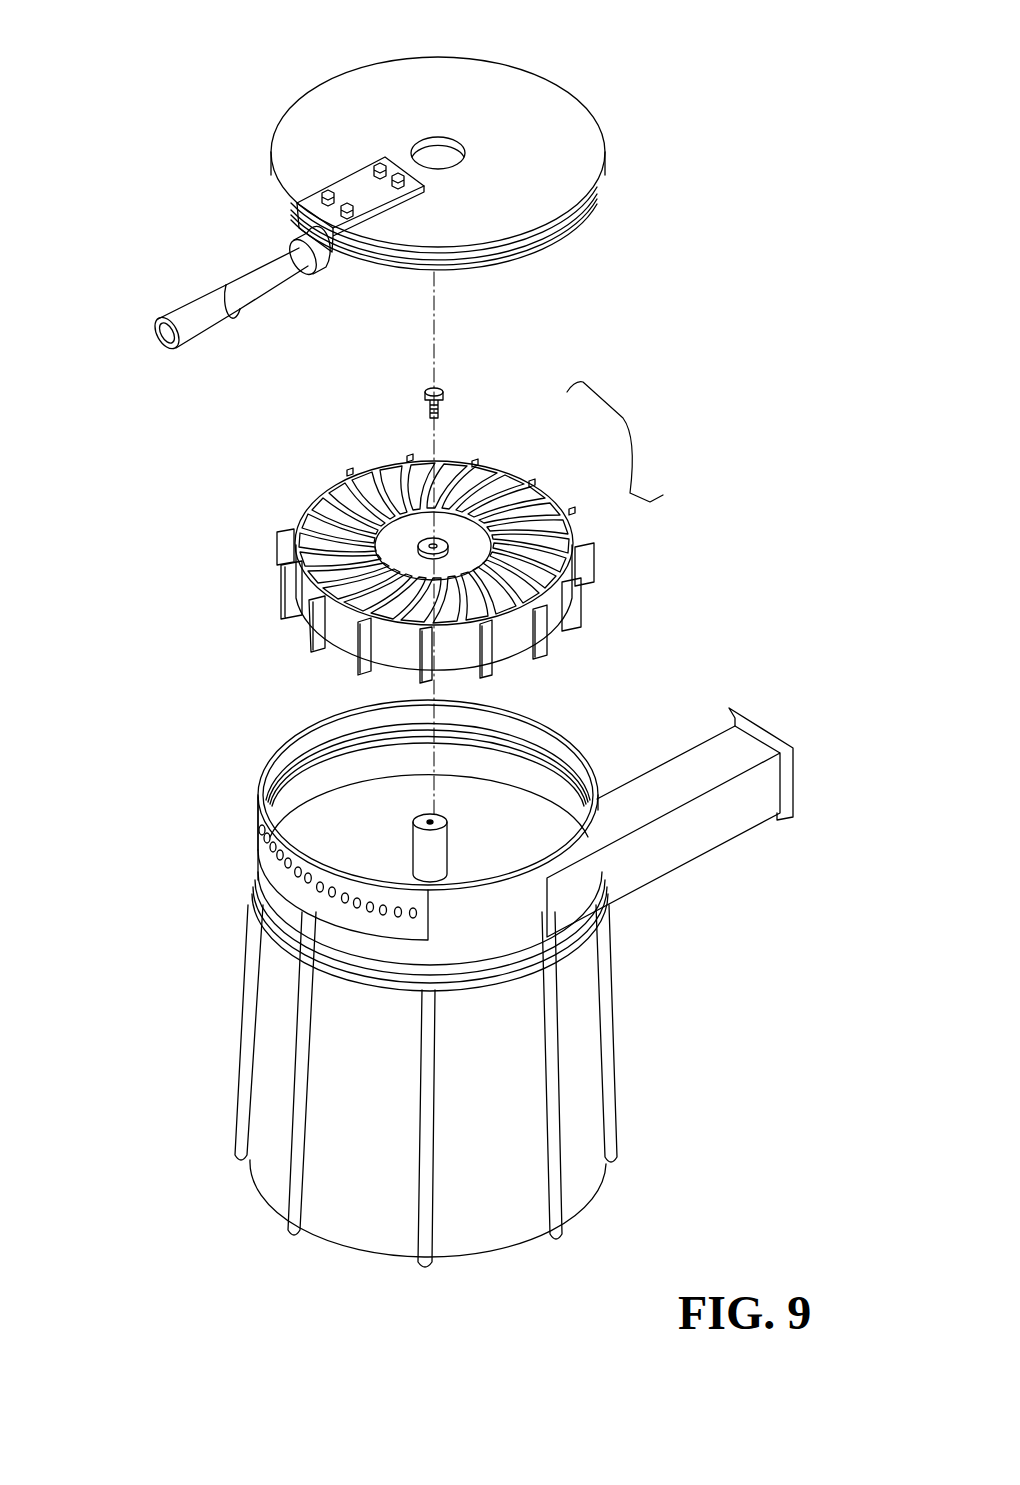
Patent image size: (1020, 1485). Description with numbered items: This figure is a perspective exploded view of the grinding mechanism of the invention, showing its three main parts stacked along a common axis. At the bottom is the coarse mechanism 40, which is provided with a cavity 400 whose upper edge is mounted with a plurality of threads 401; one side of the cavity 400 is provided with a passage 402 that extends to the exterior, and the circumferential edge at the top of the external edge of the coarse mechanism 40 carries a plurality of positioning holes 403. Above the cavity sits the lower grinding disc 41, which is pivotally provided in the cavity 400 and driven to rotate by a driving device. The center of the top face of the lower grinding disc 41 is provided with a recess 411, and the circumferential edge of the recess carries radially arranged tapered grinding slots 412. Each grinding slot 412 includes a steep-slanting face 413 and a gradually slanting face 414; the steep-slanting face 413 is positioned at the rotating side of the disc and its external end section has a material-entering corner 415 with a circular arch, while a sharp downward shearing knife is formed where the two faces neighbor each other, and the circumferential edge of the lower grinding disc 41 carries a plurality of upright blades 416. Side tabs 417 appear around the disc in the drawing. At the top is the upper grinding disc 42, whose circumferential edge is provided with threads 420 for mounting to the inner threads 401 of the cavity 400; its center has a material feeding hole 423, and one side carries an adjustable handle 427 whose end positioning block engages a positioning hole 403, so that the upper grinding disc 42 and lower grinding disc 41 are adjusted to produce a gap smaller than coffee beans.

The upper grinding disc 42 is at (412, 177).
The threads 420 is at (560, 224).
The material feeding hole 423 is at (433, 155).
The adjustable handle 427 is at (228, 276).
The lower grinding disc 41 is at (412, 532).
The recess 411 is at (397, 550).
The tapered grinding slots 412 is at (629, 442).
The steep-slanting face 413 is at (483, 485).
The gradually slanting face 414 is at (497, 508).
The material-entering corner 415 is at (507, 497).
The upright blades 416 is at (574, 512).
The side tab 417 is at (293, 597).
The coarse mechanism 40 is at (466, 954).
The cavity 400 is at (338, 800).
The threads 401 is at (305, 740).
The passage 402 is at (745, 753).
The positioning holes 403 is at (297, 877).